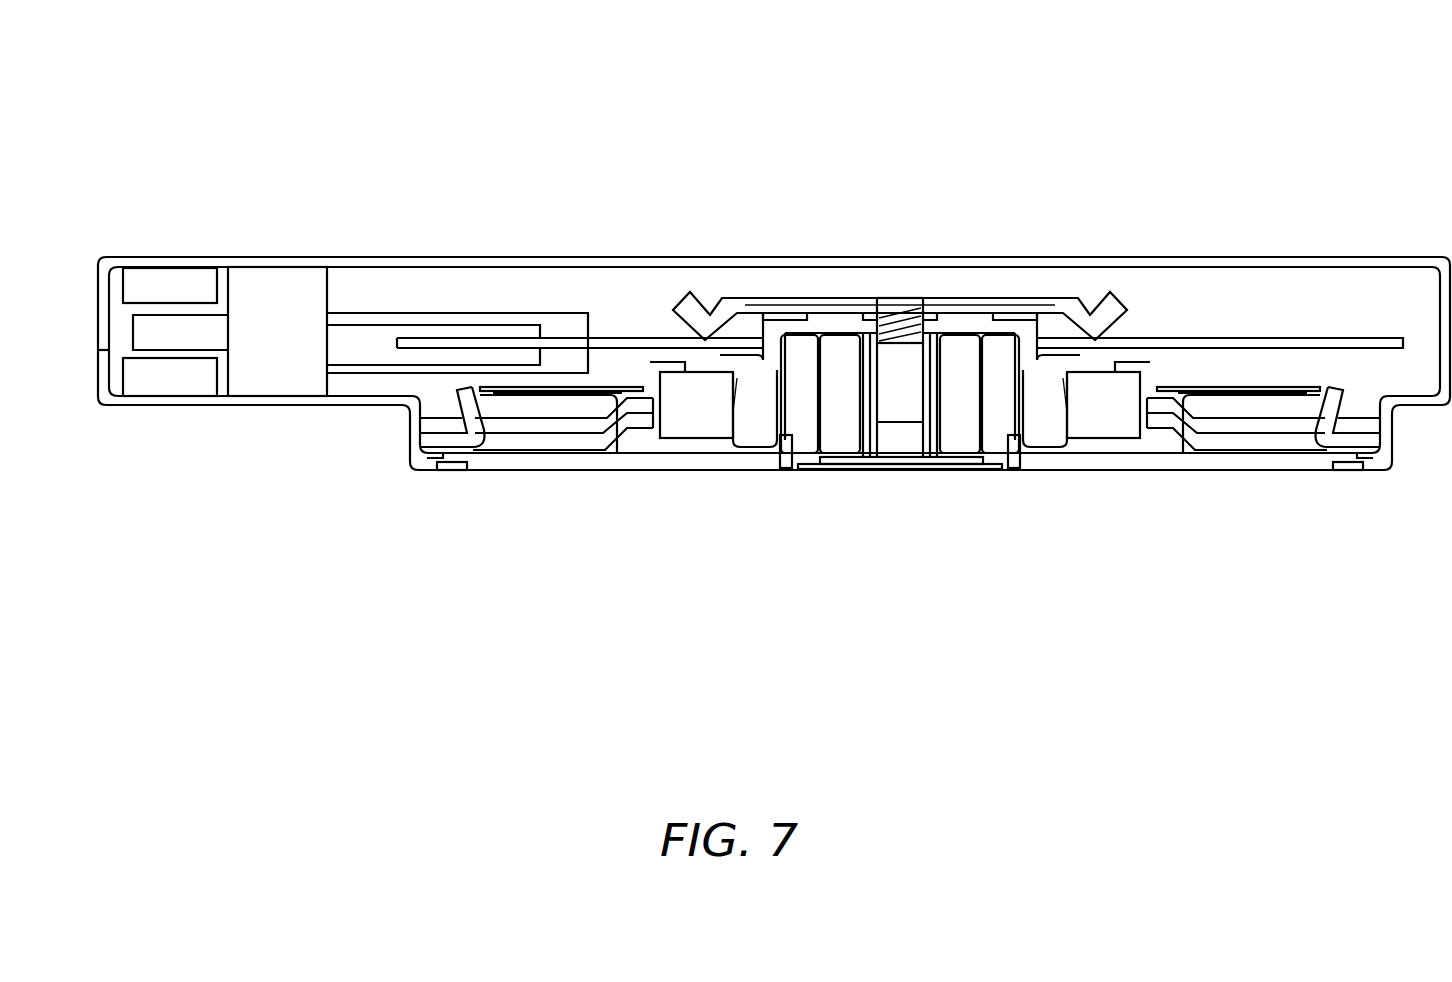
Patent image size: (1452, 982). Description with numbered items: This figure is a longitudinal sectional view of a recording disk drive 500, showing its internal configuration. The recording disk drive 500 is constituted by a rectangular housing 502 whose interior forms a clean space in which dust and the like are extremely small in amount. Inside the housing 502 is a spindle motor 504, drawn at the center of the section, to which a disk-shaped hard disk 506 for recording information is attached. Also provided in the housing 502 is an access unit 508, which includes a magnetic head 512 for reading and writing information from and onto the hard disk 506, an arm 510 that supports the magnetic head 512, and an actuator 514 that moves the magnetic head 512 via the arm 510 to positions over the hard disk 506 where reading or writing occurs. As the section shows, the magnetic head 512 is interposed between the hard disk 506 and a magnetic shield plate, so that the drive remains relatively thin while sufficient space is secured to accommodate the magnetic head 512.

The recording disk drive 500 is at (782, 60).
The housing 502 is at (920, 260).
The spindle motor 504 is at (905, 490).
The hard disk 506 is at (1202, 342).
The access unit 508 is at (270, 432).
The arm 510 is at (402, 320).
The magnetic head 512 is at (572, 333).
The actuator 514 is at (292, 313).